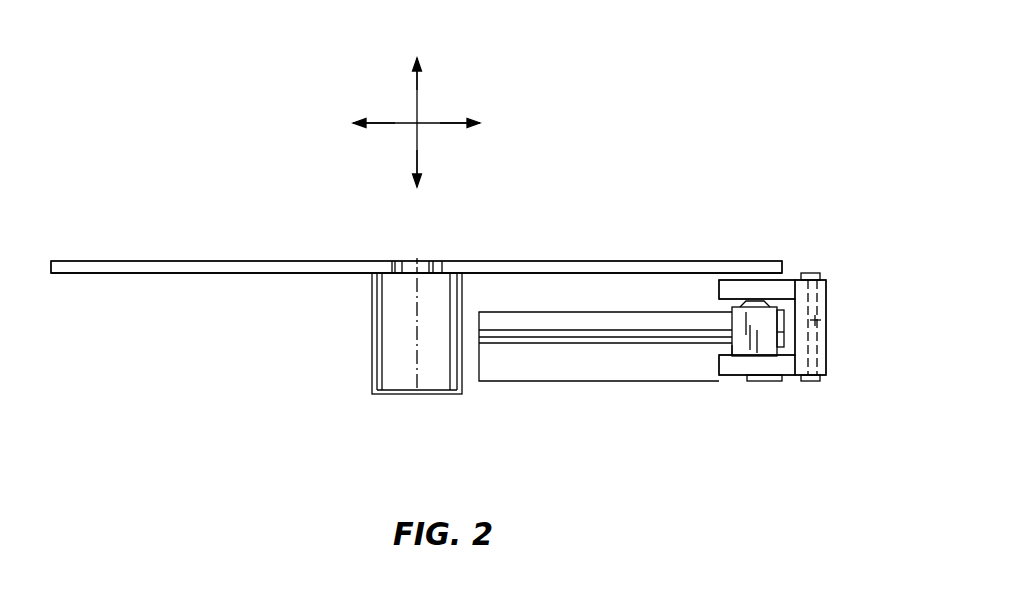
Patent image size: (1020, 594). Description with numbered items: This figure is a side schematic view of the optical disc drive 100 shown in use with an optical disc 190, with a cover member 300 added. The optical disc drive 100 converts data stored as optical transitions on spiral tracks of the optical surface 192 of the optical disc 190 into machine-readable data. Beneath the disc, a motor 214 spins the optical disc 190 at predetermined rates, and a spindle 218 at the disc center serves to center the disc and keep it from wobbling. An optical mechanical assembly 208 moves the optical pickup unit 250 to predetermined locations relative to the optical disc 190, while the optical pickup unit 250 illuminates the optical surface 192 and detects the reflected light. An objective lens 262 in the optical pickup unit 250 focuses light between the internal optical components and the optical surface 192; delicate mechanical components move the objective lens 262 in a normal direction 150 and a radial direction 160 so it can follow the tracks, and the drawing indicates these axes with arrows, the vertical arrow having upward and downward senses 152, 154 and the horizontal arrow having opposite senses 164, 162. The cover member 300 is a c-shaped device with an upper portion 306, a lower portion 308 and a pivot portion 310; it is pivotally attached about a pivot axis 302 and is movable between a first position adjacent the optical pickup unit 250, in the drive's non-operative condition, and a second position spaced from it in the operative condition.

The optical disc drive 100 is at (426, 191).
The normal direction 150 is at (404, 89).
The upward direction 152 is at (418, 88).
The downward direction 154 is at (413, 155).
The radial direction 160 is at (451, 112).
The rightward direction 162 is at (447, 125).
The leftward direction 164 is at (385, 125).
The optical disc 190 is at (279, 253).
The optical surface 192 is at (183, 276).
The optical mechanical assembly 208 is at (578, 395).
The motor 214 is at (394, 405).
The spindle 218 is at (415, 260).
The optical pickup unit 250 is at (733, 350).
The objective lens 262 is at (756, 301).
The cover member 300 is at (830, 257).
The pivot axis 302 is at (858, 319).
The upper portion 306 is at (768, 278).
The lower portion 308 is at (745, 376).
The pivot portion 310 is at (822, 335).